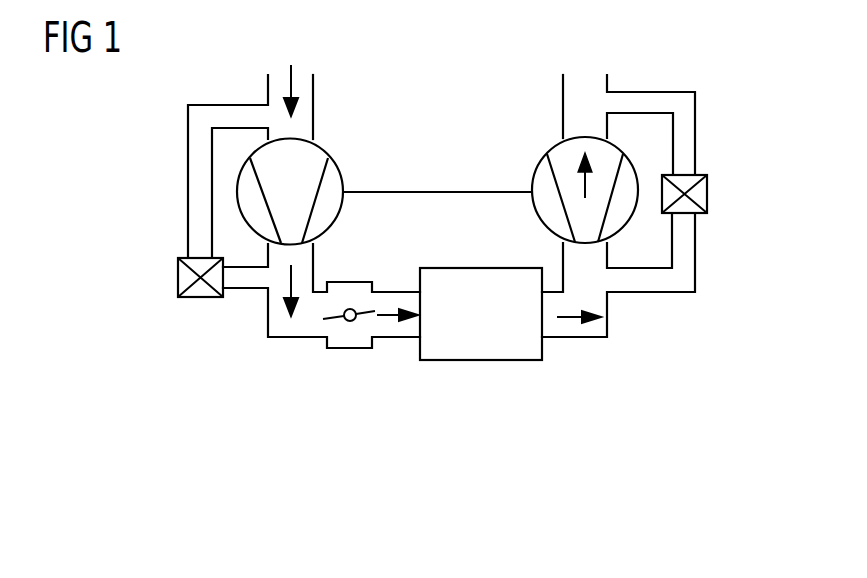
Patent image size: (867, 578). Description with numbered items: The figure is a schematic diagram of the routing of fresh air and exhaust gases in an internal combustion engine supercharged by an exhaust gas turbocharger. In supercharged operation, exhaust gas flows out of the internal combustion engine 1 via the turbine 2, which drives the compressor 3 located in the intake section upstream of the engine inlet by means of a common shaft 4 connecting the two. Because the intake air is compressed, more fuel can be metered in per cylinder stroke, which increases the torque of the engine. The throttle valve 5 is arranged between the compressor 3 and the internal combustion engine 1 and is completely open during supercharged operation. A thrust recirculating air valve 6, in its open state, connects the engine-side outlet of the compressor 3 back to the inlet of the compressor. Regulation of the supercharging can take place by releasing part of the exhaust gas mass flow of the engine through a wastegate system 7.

The internal combustion engine 1 is at (485, 348).
The turbine 2 is at (563, 158).
The compressor 3 is at (313, 157).
The common shaft 4 is at (395, 192).
The throttle valve 5 is at (352, 321).
The thrust recirculating air valve 6 is at (178, 275).
The wastegate system 7 is at (707, 193).